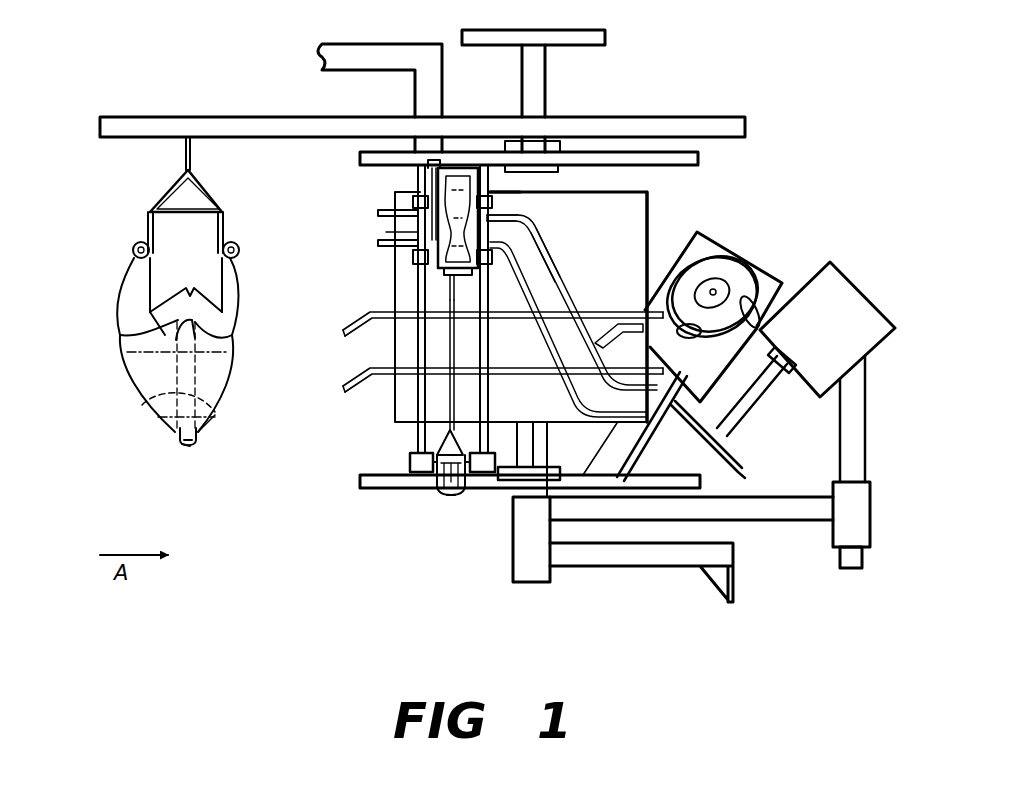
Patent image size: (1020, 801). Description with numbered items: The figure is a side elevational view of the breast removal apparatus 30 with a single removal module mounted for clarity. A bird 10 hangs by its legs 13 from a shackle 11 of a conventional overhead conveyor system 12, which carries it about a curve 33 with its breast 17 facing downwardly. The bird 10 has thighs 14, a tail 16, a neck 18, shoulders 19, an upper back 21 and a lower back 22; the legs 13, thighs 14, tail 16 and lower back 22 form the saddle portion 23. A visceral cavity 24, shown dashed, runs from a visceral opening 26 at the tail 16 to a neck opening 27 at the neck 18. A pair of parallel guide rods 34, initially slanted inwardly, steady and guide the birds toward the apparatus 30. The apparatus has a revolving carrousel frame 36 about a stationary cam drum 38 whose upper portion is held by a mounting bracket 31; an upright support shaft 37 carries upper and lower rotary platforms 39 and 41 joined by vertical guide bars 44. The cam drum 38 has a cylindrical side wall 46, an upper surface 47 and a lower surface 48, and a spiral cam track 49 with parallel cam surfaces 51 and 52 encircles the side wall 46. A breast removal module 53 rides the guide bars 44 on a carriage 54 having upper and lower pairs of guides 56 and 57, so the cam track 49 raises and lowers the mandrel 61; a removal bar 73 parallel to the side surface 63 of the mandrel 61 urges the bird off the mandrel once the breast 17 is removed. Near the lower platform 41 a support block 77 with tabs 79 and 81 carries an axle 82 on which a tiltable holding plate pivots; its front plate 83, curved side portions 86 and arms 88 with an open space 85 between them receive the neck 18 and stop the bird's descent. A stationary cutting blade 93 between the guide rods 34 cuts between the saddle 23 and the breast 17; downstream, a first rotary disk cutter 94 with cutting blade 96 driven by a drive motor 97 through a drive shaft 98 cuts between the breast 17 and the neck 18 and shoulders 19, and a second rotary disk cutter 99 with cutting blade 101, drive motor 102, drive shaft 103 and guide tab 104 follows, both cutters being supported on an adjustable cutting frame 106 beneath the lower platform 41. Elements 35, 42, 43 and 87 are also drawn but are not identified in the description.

The bird 10 is at (181, 328).
The shackle 11 is at (187, 152).
The overhead conveyor system 12 is at (444, 86).
The legs 13 is at (133, 254).
The thighs 14 is at (122, 288).
The tail 16 is at (202, 264).
The breast 17 is at (136, 379).
The neck 18 is at (196, 441).
The shoulders 19 is at (170, 428).
The upper back 21 is at (222, 414).
The lower back 22 is at (235, 361).
The saddle portion 23 is at (113, 304).
The visceral cavity 24 is at (147, 407).
The visceral opening 26 is at (128, 339).
The neck opening 27 is at (184, 443).
The breast removal apparatus 30 is at (595, 345).
The mounting bracket 31 is at (361, 47).
The curve 33 is at (741, 124).
The guide rods 34 is at (346, 386).
The mounting plate 35 is at (515, 8).
The carrousel frame 36 is at (418, 306).
The support shaft 37 is at (546, 85).
The cam drum 38 is at (650, 195).
The upper rotary platform 39 is at (698, 160).
The lower rotary platform 41 is at (360, 480).
The bracket 42 is at (552, 142).
The tie rod 43 is at (548, 470).
The vertical guide bars 44 is at (420, 343).
The cylindrical side wall 46 is at (630, 234).
The upper surface 47 is at (620, 192).
The lower surface 48 is at (636, 441).
The spiral cam track 49 is at (525, 242).
The cam surface 51 is at (534, 282).
The cam surface 52 is at (558, 282).
The breast removal module 53 is at (409, 230).
The carriage 54 is at (407, 263).
The upper pair of guides 56 is at (495, 213).
The lower pair of guides 57 is at (481, 268).
The mandrel 61 is at (446, 186).
The side surface 63 is at (442, 278).
The removal bar 73 is at (430, 218).
The support block 77 is at (456, 467).
The tab 79 is at (410, 456).
The tab 81 is at (452, 428).
The axle 82 is at (476, 436).
The front plate 83 is at (433, 495).
The open space 85 is at (435, 434).
The curved side portions 86 is at (453, 496).
The nozzle outlet 87 is at (451, 497).
The arms 88 is at (432, 465).
The stationary cutting blade 93 is at (600, 341).
The first rotary disk cutter 94 is at (741, 448).
The cutting blade 96 is at (740, 475).
The drive motor 97 is at (842, 327).
The drive shaft 98 is at (772, 405).
The second rotary disk cutter 99 is at (730, 291).
The cutting blade 101 is at (690, 266).
The drive motor 102 is at (748, 263).
The drive shaft 103 is at (690, 337).
The guide finger or tab 104 is at (752, 300).
The adjustable cutting frame 106 is at (760, 510).